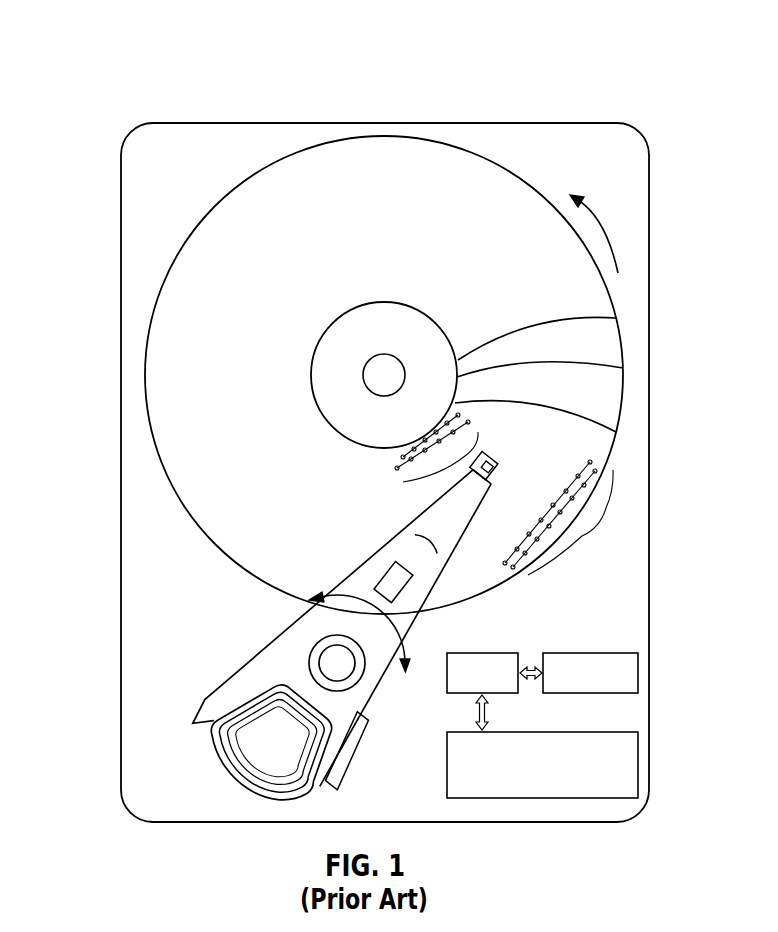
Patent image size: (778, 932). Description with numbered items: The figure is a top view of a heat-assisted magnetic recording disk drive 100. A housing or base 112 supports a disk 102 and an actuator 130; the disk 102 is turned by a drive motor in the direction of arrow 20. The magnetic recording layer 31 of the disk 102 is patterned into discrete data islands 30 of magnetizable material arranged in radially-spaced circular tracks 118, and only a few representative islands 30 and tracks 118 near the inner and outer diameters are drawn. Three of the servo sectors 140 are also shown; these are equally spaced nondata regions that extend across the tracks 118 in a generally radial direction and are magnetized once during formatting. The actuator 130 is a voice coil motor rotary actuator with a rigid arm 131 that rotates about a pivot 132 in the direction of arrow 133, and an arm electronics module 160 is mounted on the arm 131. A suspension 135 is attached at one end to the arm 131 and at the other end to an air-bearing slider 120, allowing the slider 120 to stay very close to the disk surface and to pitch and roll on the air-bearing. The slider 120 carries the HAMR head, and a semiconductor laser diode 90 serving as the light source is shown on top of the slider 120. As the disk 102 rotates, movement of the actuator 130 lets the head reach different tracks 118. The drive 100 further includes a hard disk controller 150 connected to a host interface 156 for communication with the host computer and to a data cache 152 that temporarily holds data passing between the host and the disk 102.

The HAMR disk drive 100 is at (118, 46).
The housing or base 112 is at (584, 123).
The disk 102 is at (257, 172).
The arrow 20 is at (598, 219).
The magnetic recording layer 31 is at (623, 336).
The servo sectors 140 is at (597, 362).
The tracks 118 is at (392, 462).
The data islands 30 is at (477, 438).
The semiconductor laser diode 90 is at (497, 469).
The air-bearing slider 120 is at (492, 478).
The suspension 135 is at (427, 530).
The rigid arm 131 is at (372, 572).
The arm electronics module 160 is at (405, 585).
The pivot 132 is at (324, 656).
The arrow 133 is at (407, 640).
The actuator 130 is at (196, 718).
The hard disk controller 150 is at (482, 652).
The data cache 152 is at (592, 652).
The host interface 156 is at (565, 732).